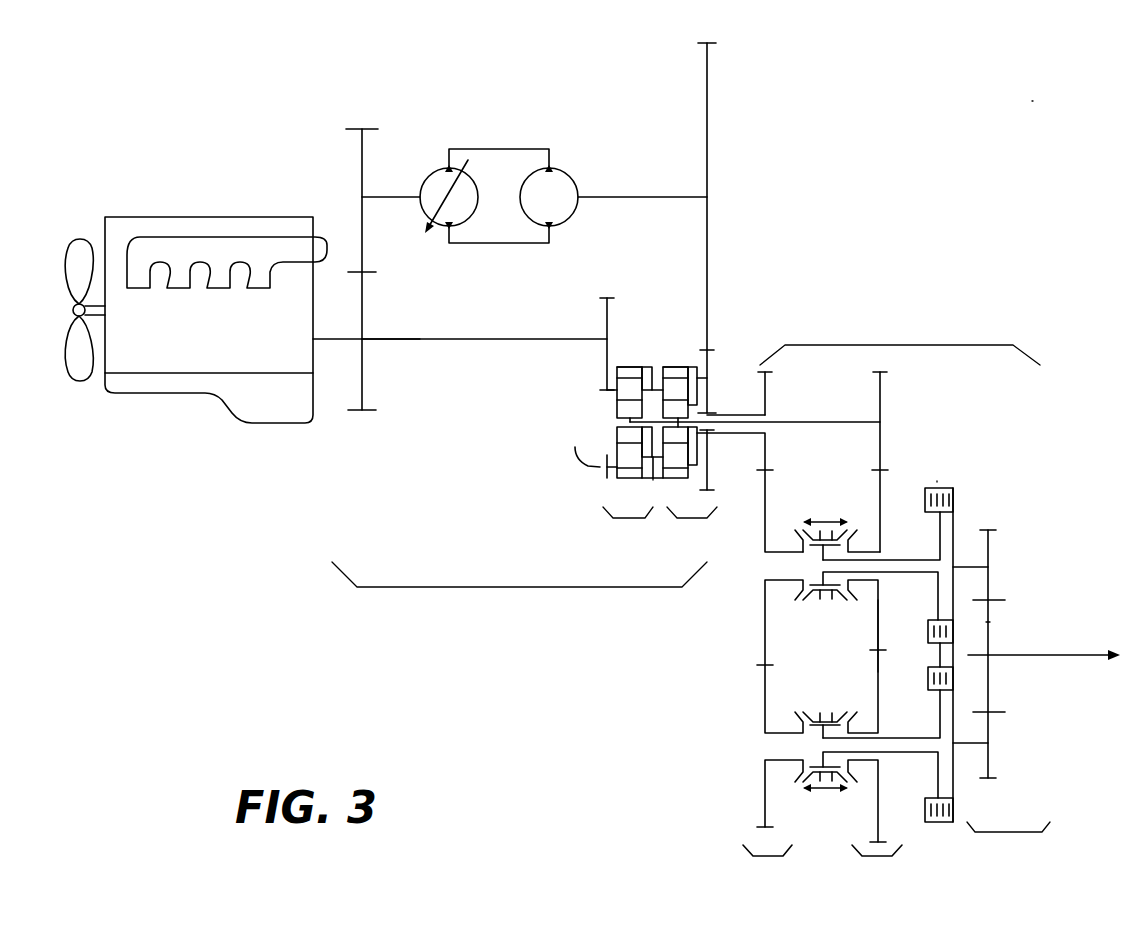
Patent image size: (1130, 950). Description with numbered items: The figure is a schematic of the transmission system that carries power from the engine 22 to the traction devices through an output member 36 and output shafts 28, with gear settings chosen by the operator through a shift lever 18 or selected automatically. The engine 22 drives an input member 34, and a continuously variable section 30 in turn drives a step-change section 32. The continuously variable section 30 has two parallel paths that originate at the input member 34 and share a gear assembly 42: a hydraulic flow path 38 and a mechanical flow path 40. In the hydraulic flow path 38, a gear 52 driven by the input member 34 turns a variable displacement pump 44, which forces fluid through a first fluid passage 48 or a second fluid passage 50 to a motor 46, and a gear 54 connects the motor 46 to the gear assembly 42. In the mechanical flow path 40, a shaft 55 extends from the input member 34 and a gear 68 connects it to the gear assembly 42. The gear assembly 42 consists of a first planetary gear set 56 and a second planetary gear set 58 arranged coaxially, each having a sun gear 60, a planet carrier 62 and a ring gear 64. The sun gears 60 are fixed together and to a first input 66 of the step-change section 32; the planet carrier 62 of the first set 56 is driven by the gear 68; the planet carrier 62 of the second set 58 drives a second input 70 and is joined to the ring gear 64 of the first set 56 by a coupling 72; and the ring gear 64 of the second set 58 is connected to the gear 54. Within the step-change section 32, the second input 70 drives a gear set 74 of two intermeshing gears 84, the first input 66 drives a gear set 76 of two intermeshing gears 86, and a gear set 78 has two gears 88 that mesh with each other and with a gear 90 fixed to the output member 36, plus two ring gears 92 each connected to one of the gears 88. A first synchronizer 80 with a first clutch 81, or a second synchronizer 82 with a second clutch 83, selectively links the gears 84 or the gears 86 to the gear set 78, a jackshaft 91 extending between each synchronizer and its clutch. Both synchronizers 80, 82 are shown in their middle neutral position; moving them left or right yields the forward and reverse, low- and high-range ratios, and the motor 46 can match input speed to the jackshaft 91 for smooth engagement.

The shift lever 18 is at (1038, 100).
The engine 22 is at (193, 352).
The output shaft 28 is at (1044, 654).
The continuously variable section 30 is at (540, 588).
The step-change section 32 is at (895, 345).
The input member 34 is at (332, 346).
The output member 36 is at (1010, 660).
The hydraulic flow path 38 is at (477, 265).
The mechanical flow path 40 is at (462, 378).
The gear assembly 42 is at (548, 461).
The pump 44 is at (437, 211).
The motor 46 is at (537, 211).
The first fluid passage 48 is at (503, 149).
The second fluid passage 50 is at (506, 246).
The gear 52 is at (366, 252).
The gear 54 is at (714, 252).
The shaft 55 is at (490, 344).
The first planetary gear set 56 is at (628, 521).
The second planetary gear set 58 is at (690, 521).
The sun gear 60 is at (678, 405).
The planet carrier 62 is at (697, 447).
The ring gear 64 is at (628, 363).
The first input 66 is at (786, 421).
The gear 68 is at (608, 297).
The second input 70 is at (766, 447).
The coupling 72 is at (653, 482).
The gear set 74 is at (766, 858).
The gear set 76 is at (878, 858).
The gear set 78 is at (1005, 835).
The first synchronizer 80 is at (825, 520).
The first clutch 81 is at (937, 474).
The second synchronizer 82 is at (822, 820).
The second clutch 83 is at (939, 838).
The gears 84 is at (762, 607).
The gears 86 is at (882, 672).
The gears 88 is at (990, 585).
The gear 90 is at (990, 622).
The jackshaft 91 is at (893, 559).
The ring gears 92 is at (955, 511).